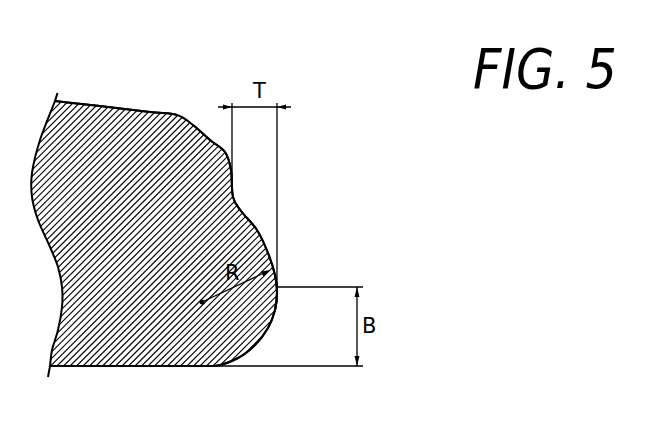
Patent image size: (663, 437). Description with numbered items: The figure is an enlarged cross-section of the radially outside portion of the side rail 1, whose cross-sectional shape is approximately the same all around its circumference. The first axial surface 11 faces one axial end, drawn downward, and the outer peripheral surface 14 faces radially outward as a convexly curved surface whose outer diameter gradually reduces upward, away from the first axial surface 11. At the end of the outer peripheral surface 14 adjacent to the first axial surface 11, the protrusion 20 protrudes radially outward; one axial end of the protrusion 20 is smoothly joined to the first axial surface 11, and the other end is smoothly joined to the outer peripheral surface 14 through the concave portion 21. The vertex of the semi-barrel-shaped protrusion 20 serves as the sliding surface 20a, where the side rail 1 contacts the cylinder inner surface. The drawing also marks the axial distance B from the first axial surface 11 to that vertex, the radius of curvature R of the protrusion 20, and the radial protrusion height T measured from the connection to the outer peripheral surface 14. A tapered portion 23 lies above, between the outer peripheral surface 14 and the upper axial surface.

The side rail 1 is at (354, 87).
The first axial surface 11 is at (83, 367).
The outer peripheral surface 14 is at (228, 152).
The protrusion 20 is at (274, 258).
The sliding surface 20a is at (277, 302).
The concave portion 21 is at (237, 201).
The tapered portion 23 is at (113, 106).